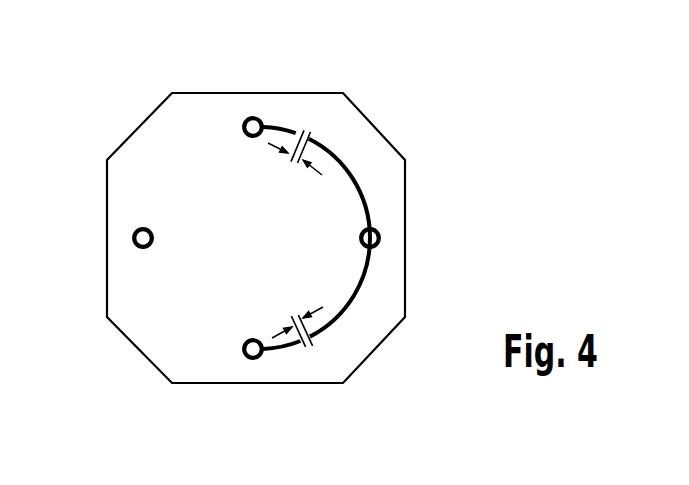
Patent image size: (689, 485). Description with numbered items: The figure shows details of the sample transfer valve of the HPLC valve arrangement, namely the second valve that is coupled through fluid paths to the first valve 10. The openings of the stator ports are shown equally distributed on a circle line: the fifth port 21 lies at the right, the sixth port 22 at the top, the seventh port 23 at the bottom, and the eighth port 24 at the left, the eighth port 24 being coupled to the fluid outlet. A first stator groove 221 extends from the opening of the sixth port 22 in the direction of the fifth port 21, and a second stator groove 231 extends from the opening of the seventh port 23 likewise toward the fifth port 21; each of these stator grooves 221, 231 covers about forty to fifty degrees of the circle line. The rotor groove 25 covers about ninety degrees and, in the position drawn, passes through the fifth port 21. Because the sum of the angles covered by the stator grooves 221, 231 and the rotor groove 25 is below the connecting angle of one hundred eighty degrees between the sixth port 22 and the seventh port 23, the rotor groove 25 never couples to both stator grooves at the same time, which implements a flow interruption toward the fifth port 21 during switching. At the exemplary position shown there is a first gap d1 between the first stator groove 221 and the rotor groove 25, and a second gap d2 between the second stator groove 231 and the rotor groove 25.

The first valve 10 is at (378, 130).
The fifth port 21 is at (380, 239).
The sixth port 22 is at (253, 117).
The seventh port 23 is at (245, 358).
The eighth port 24 is at (132, 237).
The rotor groove 25 is at (365, 277).
The first stator groove 221 is at (297, 126).
The second stator groove 231 is at (281, 353).
The first gap d1 is at (295, 168).
The second gap d2 is at (297, 313).